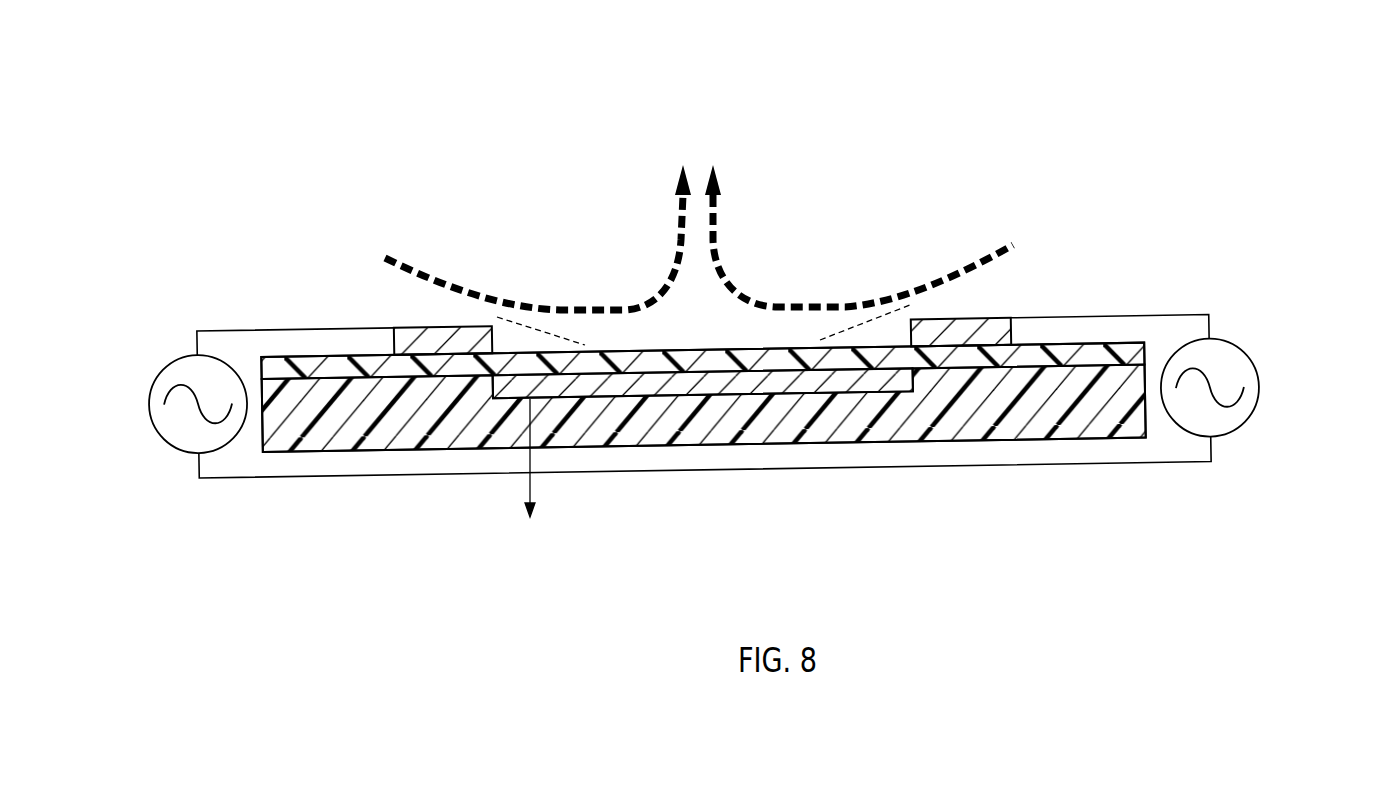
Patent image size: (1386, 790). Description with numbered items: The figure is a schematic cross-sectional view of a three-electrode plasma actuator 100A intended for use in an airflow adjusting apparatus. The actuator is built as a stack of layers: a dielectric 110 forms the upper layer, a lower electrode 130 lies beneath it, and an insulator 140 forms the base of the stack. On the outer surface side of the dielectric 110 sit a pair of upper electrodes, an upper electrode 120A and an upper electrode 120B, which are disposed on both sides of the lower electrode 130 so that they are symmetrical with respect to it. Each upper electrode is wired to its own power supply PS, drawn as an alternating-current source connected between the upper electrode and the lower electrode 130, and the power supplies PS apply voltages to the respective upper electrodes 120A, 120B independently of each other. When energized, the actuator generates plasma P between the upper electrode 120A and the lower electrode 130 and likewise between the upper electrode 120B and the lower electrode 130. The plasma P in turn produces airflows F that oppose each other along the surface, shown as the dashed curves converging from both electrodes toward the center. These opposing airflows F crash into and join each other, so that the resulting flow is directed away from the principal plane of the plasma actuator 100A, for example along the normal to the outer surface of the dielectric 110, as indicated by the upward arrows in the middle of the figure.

The three-electrode plasma actuator 100A is at (318, 207).
The dielectric 110 is at (368, 353).
The upper electrode 120A is at (440, 327).
The upper electrode 120B is at (968, 315).
The lower electrode 130 is at (688, 393).
The insulator 140 is at (960, 438).
The power supply PS is at (163, 370).
The plasma P is at (527, 300).
The airflow F is at (572, 295).